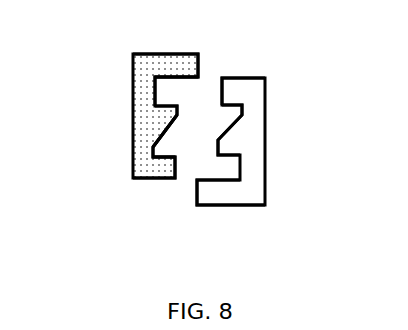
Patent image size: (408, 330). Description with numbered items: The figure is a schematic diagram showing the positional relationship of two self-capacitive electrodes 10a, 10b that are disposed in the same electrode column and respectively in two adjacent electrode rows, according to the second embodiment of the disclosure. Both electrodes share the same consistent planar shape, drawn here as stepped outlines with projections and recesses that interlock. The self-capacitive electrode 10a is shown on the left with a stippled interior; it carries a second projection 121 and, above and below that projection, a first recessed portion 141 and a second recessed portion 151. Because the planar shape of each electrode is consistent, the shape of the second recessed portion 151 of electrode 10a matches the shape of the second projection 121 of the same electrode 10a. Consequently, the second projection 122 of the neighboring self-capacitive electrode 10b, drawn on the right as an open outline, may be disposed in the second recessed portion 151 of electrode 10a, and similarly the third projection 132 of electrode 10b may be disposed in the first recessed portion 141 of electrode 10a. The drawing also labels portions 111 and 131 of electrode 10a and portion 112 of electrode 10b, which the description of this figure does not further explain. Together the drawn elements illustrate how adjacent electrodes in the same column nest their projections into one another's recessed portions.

The self-capacitive electrode 10a is at (163, 53).
The self-capacitive electrode 10b is at (265, 192).
The first main body 111 is at (181, 70).
The second main body 112 is at (222, 202).
The second projection 121 is at (165, 120).
The second projection 122 is at (230, 145).
The first end portion 131 is at (167, 170).
The third projection 132 is at (232, 90).
The first recessed portion 141 is at (172, 90).
The second recessed portion 151 is at (170, 145).